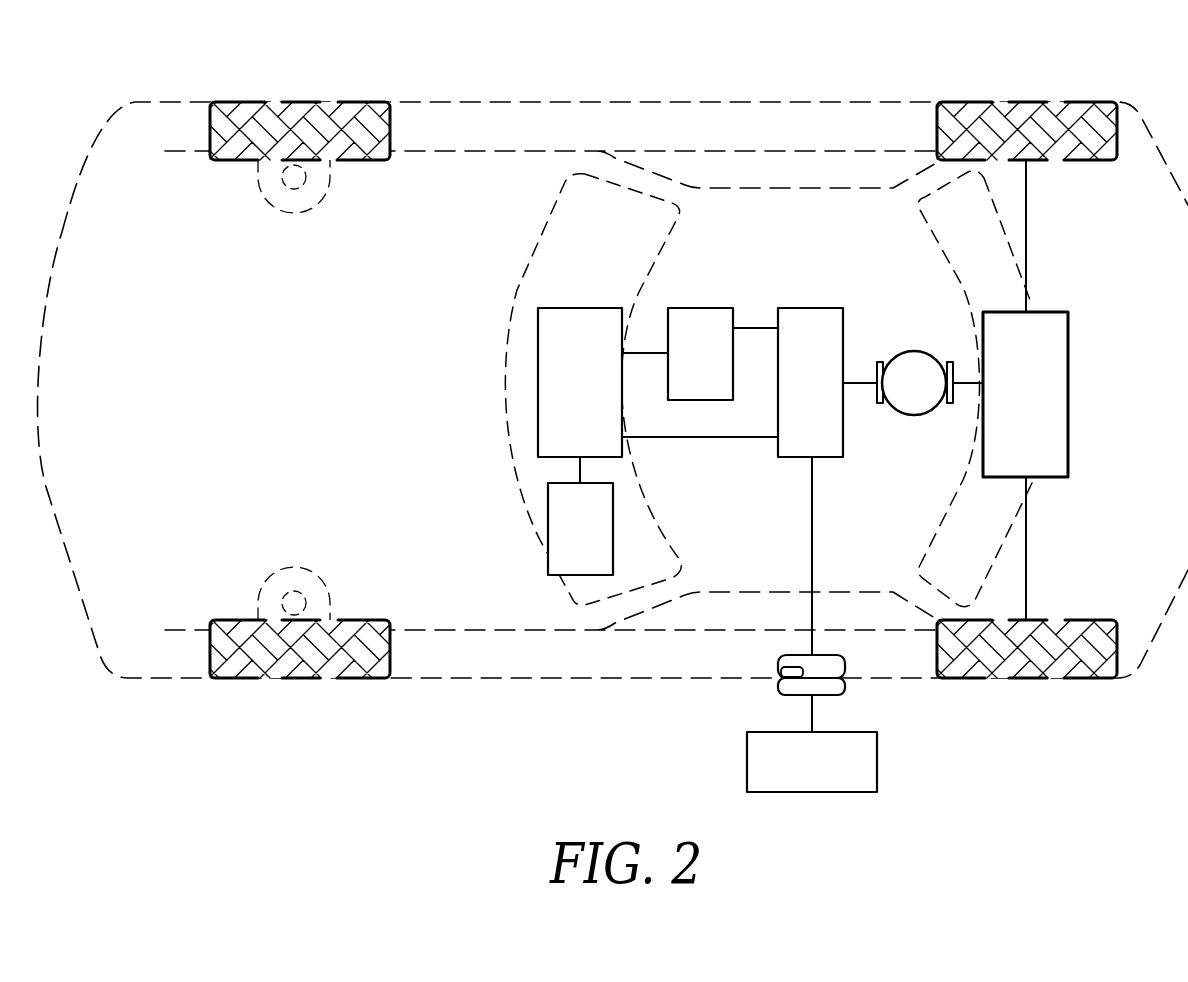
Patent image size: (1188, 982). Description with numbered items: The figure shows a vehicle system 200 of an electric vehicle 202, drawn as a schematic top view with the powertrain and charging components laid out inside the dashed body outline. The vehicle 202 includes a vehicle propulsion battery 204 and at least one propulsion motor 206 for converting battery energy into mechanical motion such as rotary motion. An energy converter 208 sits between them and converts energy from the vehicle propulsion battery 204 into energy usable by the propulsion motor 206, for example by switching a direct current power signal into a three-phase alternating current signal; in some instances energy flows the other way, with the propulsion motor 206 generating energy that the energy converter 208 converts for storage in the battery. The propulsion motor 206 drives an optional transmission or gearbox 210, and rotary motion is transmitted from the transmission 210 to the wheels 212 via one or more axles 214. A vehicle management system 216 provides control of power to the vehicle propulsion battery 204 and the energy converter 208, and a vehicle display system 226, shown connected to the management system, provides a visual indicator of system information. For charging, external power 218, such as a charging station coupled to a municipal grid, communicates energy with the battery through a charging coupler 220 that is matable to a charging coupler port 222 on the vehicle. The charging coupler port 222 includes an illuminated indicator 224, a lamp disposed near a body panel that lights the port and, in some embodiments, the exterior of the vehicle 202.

The vehicle system 200 is at (405, 67).
The vehicle 202 is at (628, 100).
The vehicle propulsion battery 204 is at (703, 307).
The propulsion motor 206 is at (914, 351).
The energy converter 208 is at (812, 307).
The transmission 210 is at (1068, 392).
The wheels 212 is at (1026, 100).
The axles 214 is at (1028, 222).
The vehicle management system 216 is at (580, 307).
The external power 218 is at (747, 762).
The charging coupler 220 is at (778, 694).
The charging coupler port 222 is at (847, 668).
The illuminated indicator 224 is at (790, 660).
The vehicle display system 226 is at (548, 520).